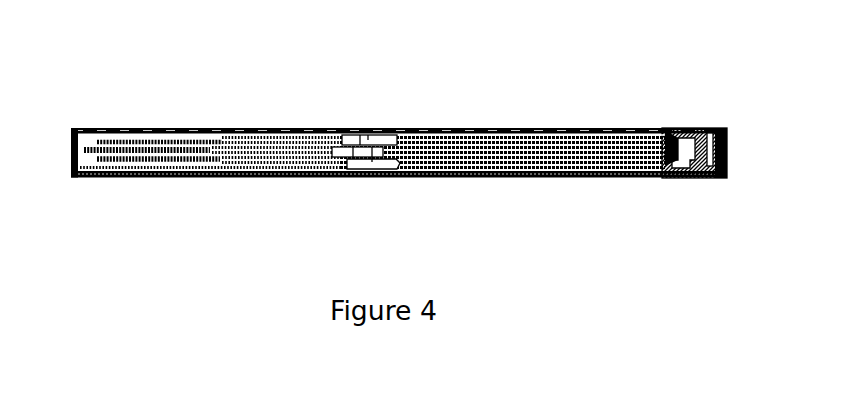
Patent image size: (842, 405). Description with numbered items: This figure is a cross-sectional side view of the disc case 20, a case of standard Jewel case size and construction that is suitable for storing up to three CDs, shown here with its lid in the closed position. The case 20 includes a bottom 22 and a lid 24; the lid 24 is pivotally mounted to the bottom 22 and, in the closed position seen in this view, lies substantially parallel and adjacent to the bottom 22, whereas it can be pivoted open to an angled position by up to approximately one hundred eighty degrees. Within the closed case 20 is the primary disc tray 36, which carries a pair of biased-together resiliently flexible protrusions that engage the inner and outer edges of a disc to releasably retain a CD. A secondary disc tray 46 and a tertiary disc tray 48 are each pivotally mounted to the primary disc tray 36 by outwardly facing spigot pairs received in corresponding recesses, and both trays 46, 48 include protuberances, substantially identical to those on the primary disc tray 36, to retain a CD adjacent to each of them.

The case 20 is at (399, 142).
The bottom 22 is at (515, 128).
The lid 24 is at (582, 172).
The primary disc tray 36 is at (682, 128).
The secondary disc tray 46 is at (308, 172).
The tertiary disc tray 48 is at (388, 174).